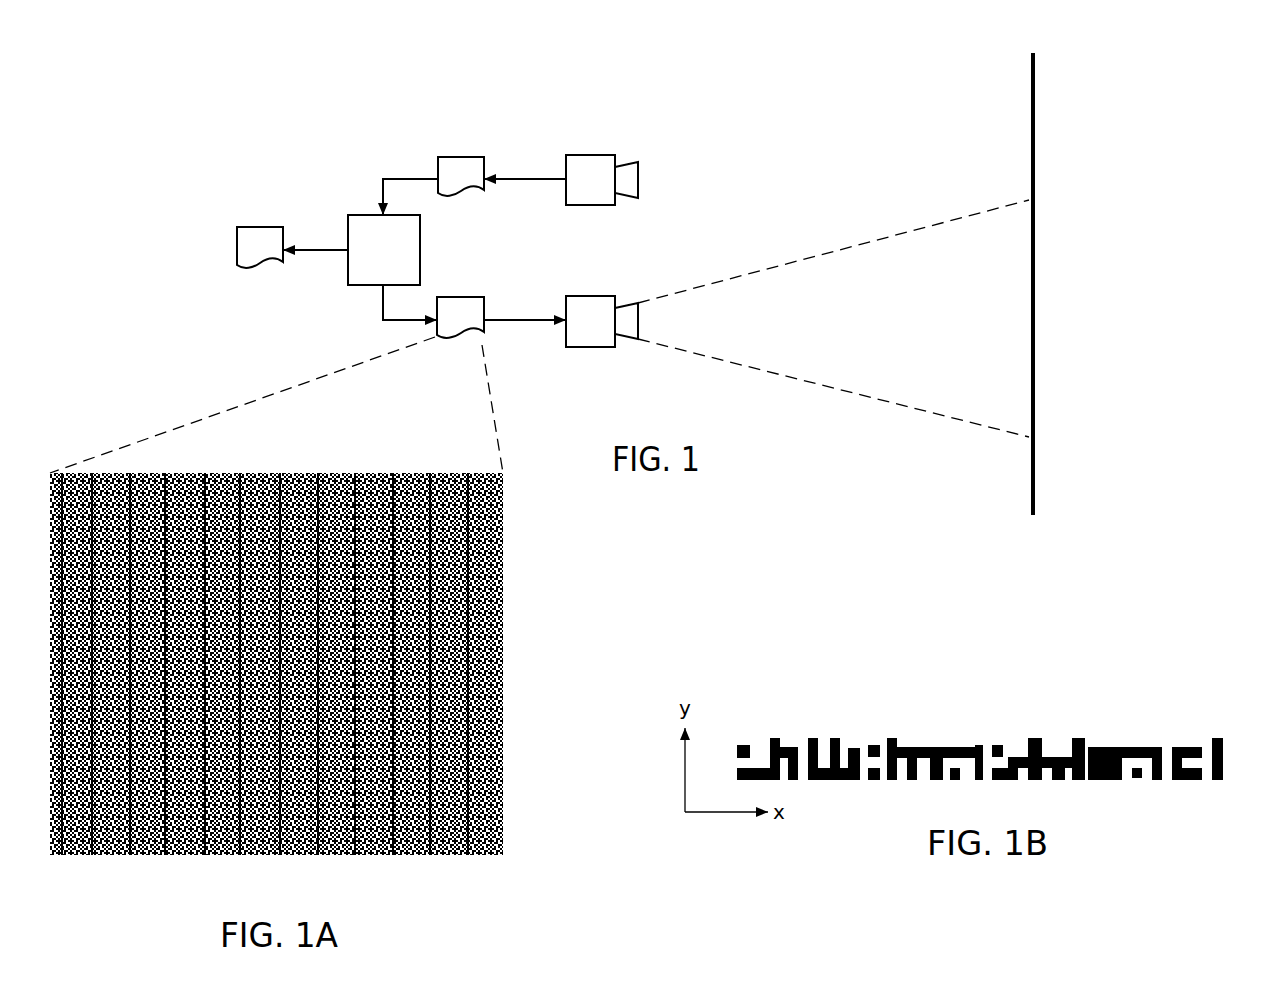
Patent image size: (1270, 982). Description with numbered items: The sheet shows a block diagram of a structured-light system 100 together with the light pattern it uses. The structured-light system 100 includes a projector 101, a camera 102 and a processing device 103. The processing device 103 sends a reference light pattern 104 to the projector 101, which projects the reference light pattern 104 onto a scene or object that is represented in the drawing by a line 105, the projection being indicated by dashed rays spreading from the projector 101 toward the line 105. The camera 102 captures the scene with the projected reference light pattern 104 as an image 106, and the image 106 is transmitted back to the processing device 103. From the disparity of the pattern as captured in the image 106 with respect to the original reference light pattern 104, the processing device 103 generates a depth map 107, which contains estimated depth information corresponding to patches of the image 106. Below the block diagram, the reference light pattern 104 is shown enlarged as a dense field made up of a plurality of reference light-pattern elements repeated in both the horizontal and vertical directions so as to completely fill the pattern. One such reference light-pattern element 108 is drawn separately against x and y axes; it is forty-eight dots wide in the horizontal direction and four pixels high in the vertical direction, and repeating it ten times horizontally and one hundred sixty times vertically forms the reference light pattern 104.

In FIG. 1, the structured-light system 100 is at (408, 102).
In FIG. 1, the projector 101 is at (587, 347).
In FIG. 1, the camera 102 is at (587, 206).
In FIG. 1, the processing device 103 is at (363, 287).
In FIG. 1, the reference light pattern 104 is at (470, 297).
In FIG. 1A, the reference light pattern 104 is at (205, 852).
In FIG. 1, the line 105 is at (1029, 137).
In FIG. 1, the image 106 is at (471, 157).
In FIG. 1, the depth map 107 is at (270, 227).
In FIG. 1B, the reference light-pattern element 108 is at (1117, 722).